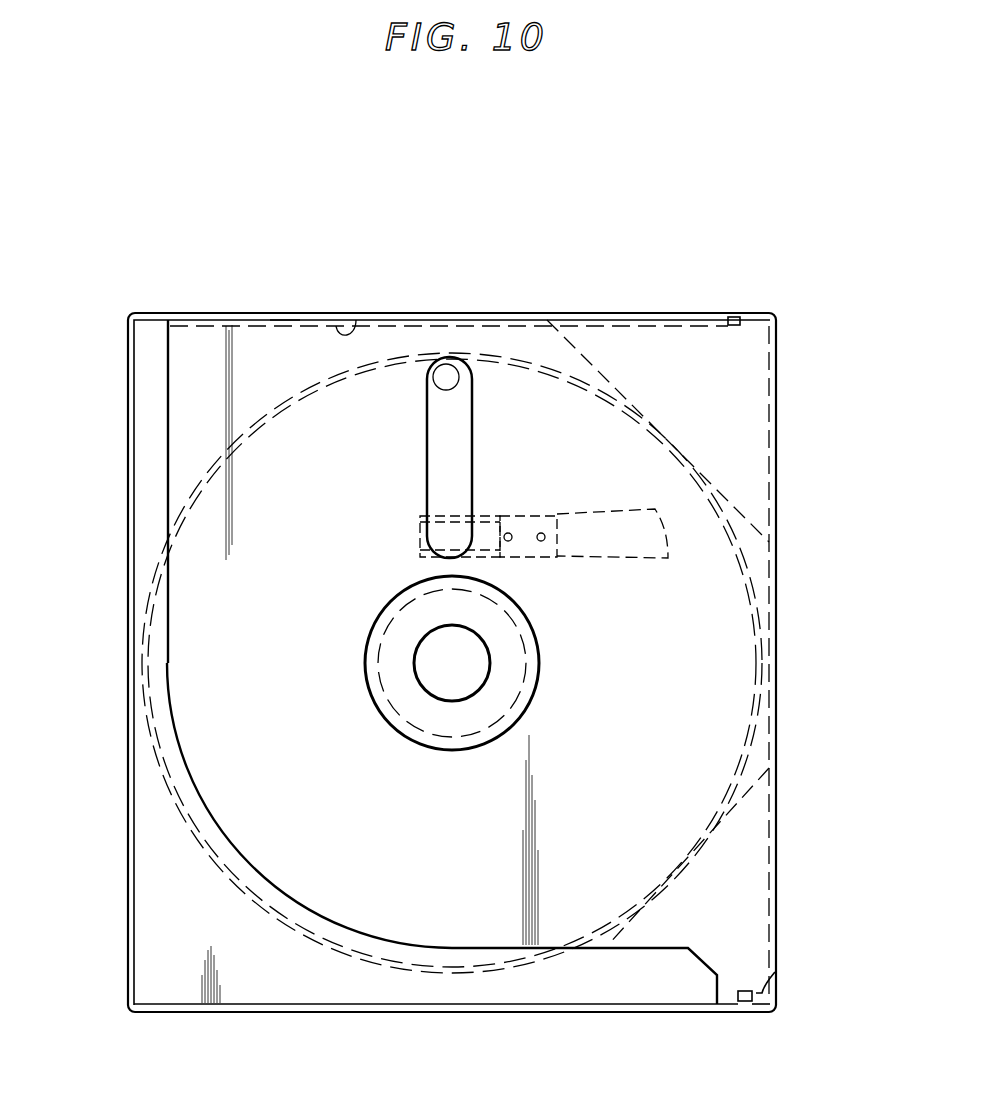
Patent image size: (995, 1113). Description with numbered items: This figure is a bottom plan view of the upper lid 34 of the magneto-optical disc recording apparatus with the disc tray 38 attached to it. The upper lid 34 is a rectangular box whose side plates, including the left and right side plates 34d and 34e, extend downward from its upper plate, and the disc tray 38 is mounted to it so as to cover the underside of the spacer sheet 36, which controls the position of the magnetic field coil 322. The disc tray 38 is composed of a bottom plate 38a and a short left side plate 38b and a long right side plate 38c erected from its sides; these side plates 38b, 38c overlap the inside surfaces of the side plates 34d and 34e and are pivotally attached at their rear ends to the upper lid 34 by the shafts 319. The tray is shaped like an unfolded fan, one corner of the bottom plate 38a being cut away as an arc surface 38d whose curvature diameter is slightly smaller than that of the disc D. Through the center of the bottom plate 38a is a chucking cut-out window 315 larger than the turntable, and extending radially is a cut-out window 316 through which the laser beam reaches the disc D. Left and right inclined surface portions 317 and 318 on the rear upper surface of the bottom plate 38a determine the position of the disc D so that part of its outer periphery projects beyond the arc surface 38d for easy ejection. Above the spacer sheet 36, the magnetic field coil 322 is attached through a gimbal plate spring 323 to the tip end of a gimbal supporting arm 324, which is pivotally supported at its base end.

The upper lid 34 is at (131, 487).
The left side plate 34d is at (655, 314).
The right side plate 34e is at (662, 1012).
The spacer sheet 36 is at (158, 747).
The disc tray 38 is at (168, 401).
The bottom plate 38a is at (285, 338).
The left side plate 38b is at (356, 320).
The right side plate 38c is at (768, 982).
The arc surface 38d is at (252, 865).
The disc D is at (195, 796).
The chucking cut-out window 315 is at (383, 615).
The cut-out window 316 is at (449, 358).
The left inclined surface portion 317 is at (550, 320).
The right inclined surface portion 318 is at (740, 813).
The shaft 319 is at (733, 317).
The magnetic field coil 322 is at (420, 525).
The gimbal plate spring 323 is at (525, 518).
The gimbal supporting arm 324 is at (597, 520).